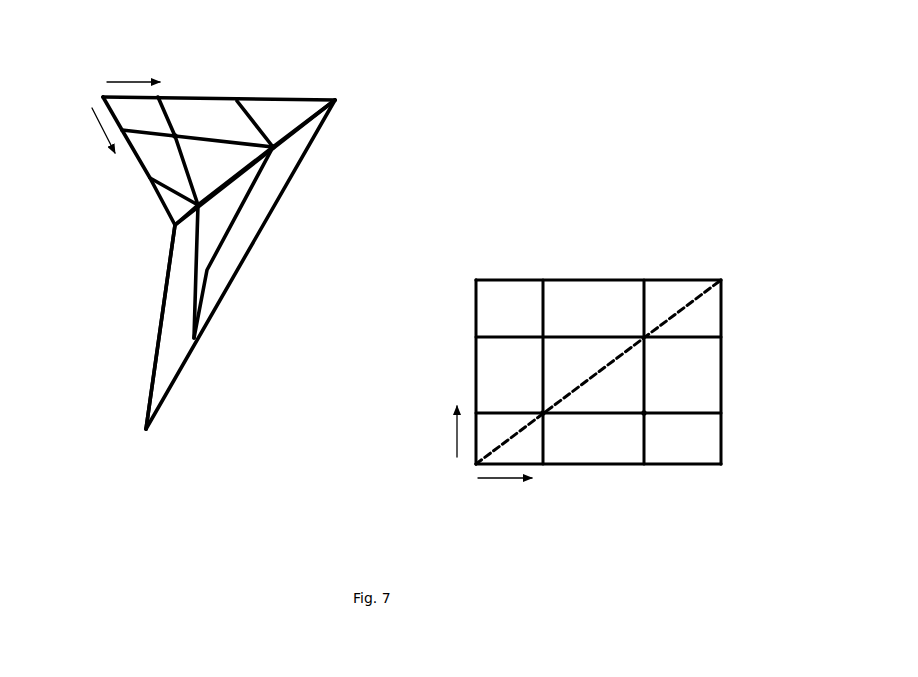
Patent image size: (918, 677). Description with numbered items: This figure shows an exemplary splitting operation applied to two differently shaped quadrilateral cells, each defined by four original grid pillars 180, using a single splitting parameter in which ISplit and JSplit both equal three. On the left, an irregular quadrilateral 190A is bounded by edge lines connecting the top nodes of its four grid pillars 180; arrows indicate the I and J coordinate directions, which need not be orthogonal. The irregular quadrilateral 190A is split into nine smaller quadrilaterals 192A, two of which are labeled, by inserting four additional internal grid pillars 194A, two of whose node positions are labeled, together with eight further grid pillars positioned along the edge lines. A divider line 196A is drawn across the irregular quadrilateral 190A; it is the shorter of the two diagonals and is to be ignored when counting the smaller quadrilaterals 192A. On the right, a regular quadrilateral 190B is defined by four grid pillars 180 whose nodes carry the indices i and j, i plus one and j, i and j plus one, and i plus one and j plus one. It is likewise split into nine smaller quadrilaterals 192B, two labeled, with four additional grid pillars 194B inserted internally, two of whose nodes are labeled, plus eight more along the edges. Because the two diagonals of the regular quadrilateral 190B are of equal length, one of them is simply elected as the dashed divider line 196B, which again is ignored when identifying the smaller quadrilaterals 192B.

The grid pillars 180 is at (103, 97).
The irregular quadrilateral 190A is at (280, 52).
The regular quadrilateral 190B is at (671, 202).
The smaller quadrilaterals 192A is at (183, 324).
The smaller quadrilaterals 192B is at (699, 401).
The additional grid pillars 194A is at (179, 142).
The additional grid pillars 194B is at (635, 408).
The divider line 196A is at (299, 132).
The divider line 196B is at (659, 318).